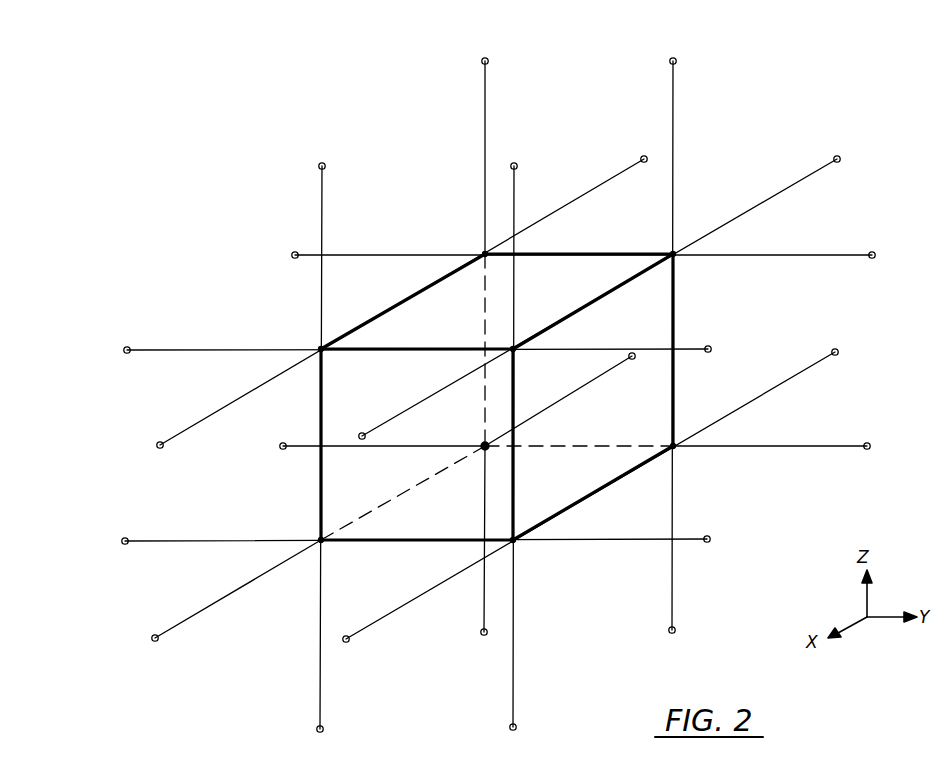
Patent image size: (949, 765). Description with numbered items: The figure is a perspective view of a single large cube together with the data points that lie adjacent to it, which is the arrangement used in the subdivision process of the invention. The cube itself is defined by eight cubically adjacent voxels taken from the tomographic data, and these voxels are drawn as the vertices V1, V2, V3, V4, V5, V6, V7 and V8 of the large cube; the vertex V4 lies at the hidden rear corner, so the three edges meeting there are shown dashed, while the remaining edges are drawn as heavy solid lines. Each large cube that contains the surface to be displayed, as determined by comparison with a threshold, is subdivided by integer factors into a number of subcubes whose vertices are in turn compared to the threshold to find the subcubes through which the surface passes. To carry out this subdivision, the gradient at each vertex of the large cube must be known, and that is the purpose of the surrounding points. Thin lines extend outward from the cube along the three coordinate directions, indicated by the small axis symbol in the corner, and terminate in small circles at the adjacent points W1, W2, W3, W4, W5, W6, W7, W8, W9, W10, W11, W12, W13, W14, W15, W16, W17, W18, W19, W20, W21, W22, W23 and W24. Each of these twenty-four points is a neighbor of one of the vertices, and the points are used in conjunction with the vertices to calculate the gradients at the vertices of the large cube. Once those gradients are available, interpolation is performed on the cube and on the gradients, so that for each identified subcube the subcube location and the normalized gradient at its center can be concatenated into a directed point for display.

The vertex V1 is at (336, 550).
The vertex V2 is at (529, 550).
The vertex V3 is at (688, 456).
The vertex V4 is at (468, 437).
The vertex V5 is at (336, 360).
The vertex V6 is at (529, 360).
The vertex V7 is at (688, 264).
The vertex V8 is at (498, 265).
The adjacent point W1 is at (318, 741).
The adjacent point W2 is at (514, 739).
The adjacent point W3 is at (675, 643).
The adjacent point W4 is at (481, 643).
The adjacent point W5 is at (151, 650).
The adjacent point W6 is at (349, 651).
The adjacent point W7 is at (727, 538).
The adjacent point W8 is at (886, 446).
The adjacent point W9 is at (854, 355).
The adjacent point W10 is at (643, 367).
The adjacent point W11 is at (261, 449).
The adjacent point W12 is at (103, 547).
The adjacent point W13 is at (135, 449).
The adjacent point W14 is at (357, 425).
The adjacent point W15 is at (733, 350).
The adjacent point W16 is at (897, 256).
The adjacent point W17 is at (842, 148).
The adjacent point W18 is at (645, 150).
The adjacent point W19 is at (270, 258).
The adjacent point W20 is at (102, 353).
The adjacent point W21 is at (324, 153).
The adjacent point W22 is at (518, 153).
The adjacent point W23 is at (676, 50).
The adjacent point W24 is at (484, 50).